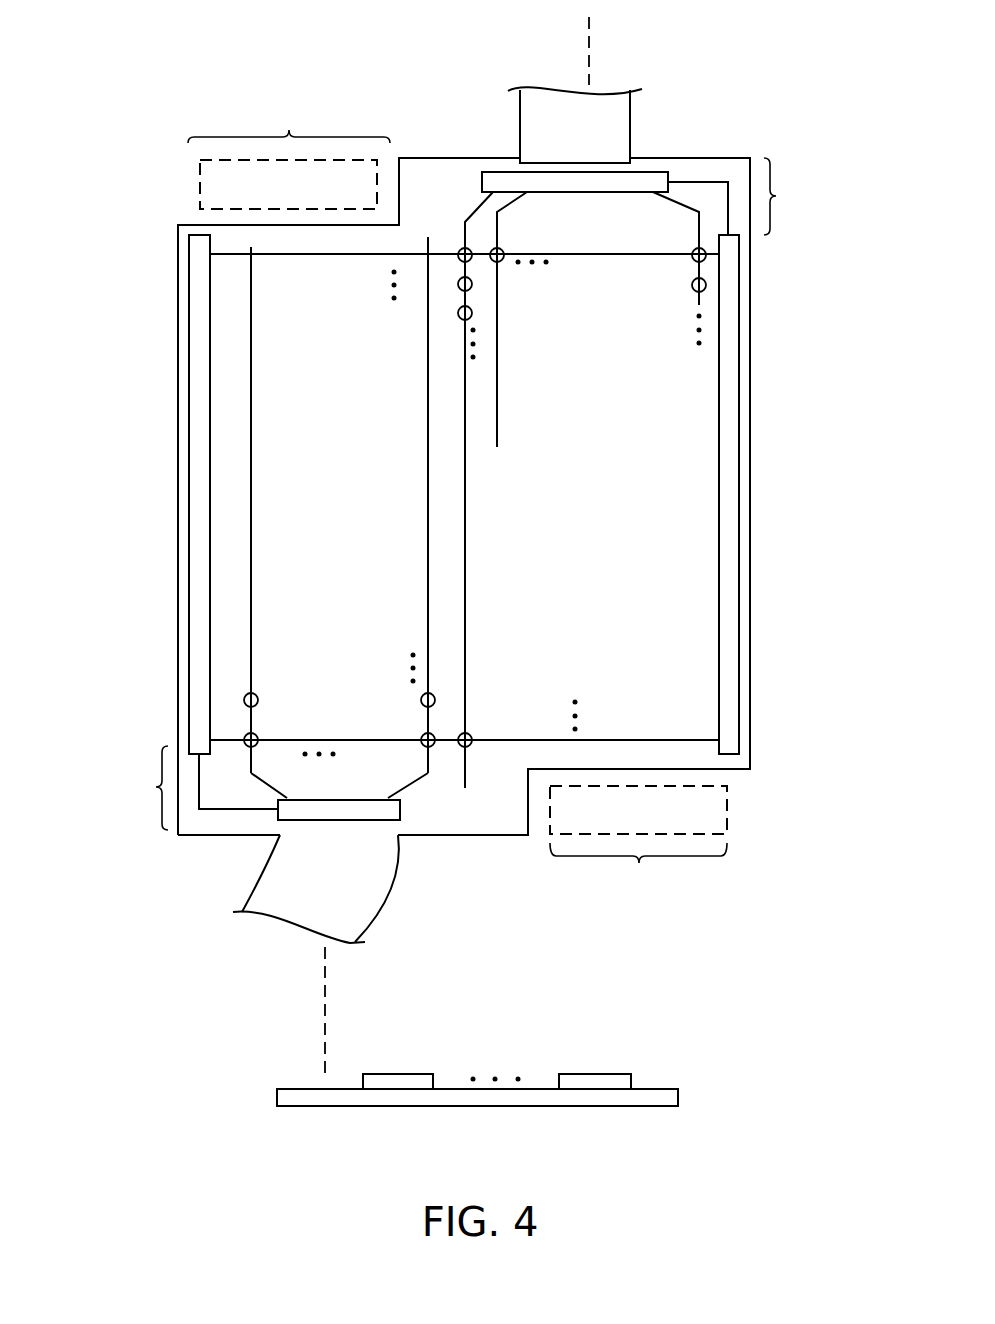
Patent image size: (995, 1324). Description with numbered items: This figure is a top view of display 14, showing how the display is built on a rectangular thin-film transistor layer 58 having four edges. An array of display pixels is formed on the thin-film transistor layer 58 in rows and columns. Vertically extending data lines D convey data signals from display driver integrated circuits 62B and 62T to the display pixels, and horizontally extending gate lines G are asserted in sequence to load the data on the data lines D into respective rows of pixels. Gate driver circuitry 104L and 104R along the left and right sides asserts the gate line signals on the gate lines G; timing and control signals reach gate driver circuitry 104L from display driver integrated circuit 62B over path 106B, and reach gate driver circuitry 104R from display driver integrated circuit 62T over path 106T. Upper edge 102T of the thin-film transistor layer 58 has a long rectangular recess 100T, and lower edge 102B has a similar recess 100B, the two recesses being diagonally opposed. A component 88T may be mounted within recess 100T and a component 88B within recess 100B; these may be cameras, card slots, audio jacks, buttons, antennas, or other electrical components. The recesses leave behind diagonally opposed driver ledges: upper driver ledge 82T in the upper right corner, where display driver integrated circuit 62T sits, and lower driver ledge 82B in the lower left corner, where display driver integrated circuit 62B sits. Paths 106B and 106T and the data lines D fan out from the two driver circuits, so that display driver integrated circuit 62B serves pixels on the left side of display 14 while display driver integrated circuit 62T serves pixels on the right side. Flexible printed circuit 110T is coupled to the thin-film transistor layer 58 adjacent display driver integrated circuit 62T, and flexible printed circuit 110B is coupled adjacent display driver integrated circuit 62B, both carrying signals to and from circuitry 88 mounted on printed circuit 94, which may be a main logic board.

The display 14 is at (126, 52).
The thin-film transistor layer 58 is at (750, 255).
The flexible printed circuit 110T is at (622, 108).
The display driver integrated circuit 62T is at (650, 177).
The path 106T is at (715, 175).
The upper driver ledge 82T is at (796, 196).
The recess 100T is at (289, 121).
The component 88T is at (200, 192).
The gate driver circuitry 104L is at (198, 511).
The gate driver circuitry 104R is at (732, 497).
The gate lines G is at (300, 262).
The data lines D is at (252, 570).
The display driver integrated circuit 62B is at (392, 808).
The path 106B is at (218, 812).
The lower driver ledge 82B is at (134, 788).
The lower edge 102B is at (430, 838).
The upper edge 102T is at (450, 157).
The component 88B is at (728, 800).
The recess 100B is at (638, 869).
The flexible printed circuit 110B is at (360, 916).
The circuitry 88 is at (407, 1072).
The printed circuit 94 is at (607, 1097).